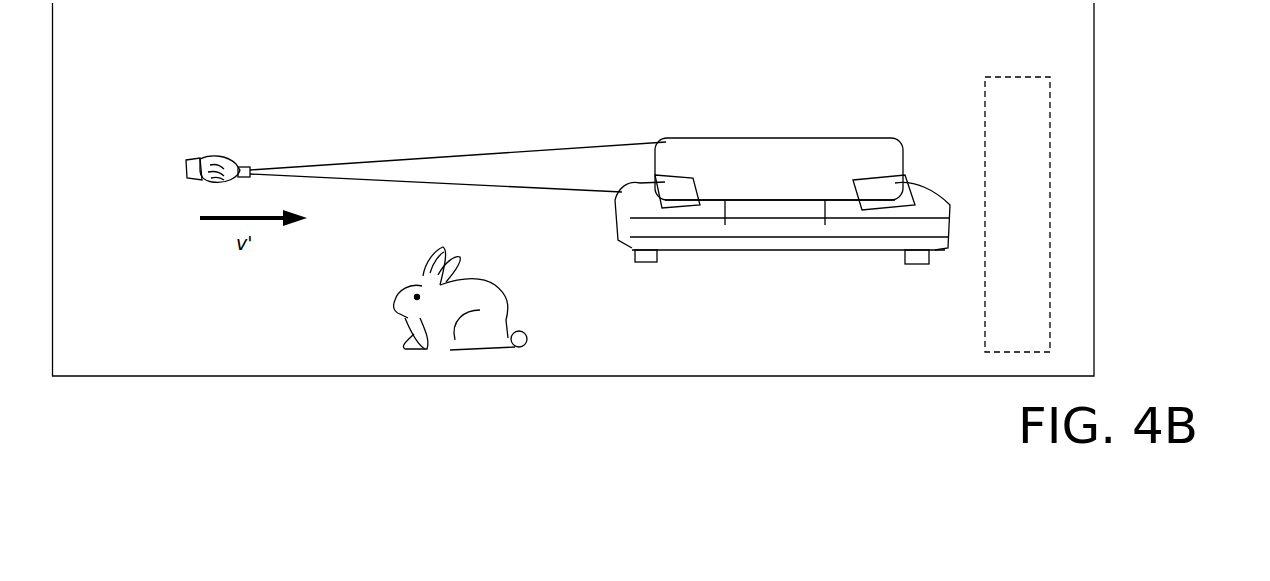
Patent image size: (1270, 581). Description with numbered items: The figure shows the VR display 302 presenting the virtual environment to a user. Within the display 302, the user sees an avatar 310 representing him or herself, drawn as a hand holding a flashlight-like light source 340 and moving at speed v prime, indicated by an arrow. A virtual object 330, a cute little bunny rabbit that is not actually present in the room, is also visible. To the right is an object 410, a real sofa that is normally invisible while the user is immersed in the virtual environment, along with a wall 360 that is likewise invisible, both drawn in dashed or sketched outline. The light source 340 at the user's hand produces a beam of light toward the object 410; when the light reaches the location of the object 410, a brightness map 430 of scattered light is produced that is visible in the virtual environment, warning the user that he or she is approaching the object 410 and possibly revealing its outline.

The VR display 302 is at (574, 189).
The avatar 310 is at (190, 164).
The light source 340 is at (330, 140).
The object 410 is at (728, 138).
The brightness map 430 is at (652, 175).
The wall invisible in virtual environment 360 is at (1050, 127).
The virtual object 330 is at (420, 322).